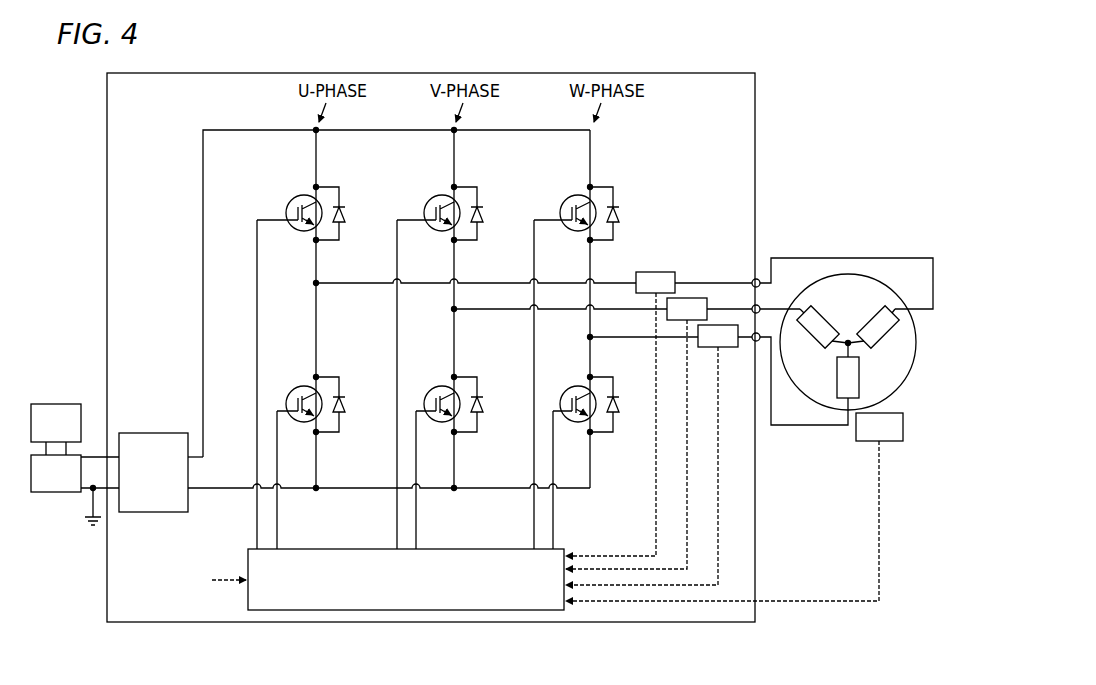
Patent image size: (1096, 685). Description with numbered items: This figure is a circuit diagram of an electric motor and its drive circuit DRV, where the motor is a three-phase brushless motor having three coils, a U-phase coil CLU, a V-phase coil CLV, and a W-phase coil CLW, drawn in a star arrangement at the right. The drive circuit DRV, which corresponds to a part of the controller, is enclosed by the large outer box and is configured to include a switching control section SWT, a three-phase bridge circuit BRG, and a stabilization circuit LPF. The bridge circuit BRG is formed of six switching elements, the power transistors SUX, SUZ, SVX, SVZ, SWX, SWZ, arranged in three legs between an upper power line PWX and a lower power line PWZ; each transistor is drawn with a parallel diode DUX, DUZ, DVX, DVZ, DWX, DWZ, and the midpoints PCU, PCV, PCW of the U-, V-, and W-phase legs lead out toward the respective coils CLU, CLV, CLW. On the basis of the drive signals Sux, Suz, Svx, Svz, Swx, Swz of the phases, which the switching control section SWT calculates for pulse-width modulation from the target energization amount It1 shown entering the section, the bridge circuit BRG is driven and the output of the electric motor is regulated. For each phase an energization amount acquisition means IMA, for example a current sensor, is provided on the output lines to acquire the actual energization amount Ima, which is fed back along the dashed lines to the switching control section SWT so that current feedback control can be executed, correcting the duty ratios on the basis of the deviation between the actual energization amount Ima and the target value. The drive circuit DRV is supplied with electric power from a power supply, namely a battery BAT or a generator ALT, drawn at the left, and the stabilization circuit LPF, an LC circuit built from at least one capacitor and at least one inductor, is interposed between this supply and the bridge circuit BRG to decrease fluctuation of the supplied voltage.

The drive circuit DRV is at (531, 73).
The positive power line PWX is at (222, 130).
The negative power line PWZ is at (196, 487).
The three-phase bridge circuit BRG is at (256, 199).
The switching element SUX is at (298, 196).
The U-phase upper diode DUX is at (345, 202).
The switching element SVX is at (436, 196).
The V-phase upper diode DVX is at (483, 202).
The switching element SWX is at (574, 189).
The W-phase upper diode DWX is at (620, 202).
The switching element SUZ is at (298, 385).
The U-phase lower diode DUZ is at (345, 392).
The switching element SVZ is at (436, 385).
The V-phase lower diode DVZ is at (483, 392).
The switching element SWZ is at (574, 378).
The W-phase lower diode DWZ is at (620, 394).
The U-phase connection point PCU is at (316, 312).
The V-phase connection point PCV is at (454, 325).
The W-phase connection point PCW is at (592, 343).
The drive signal Sux is at (242, 384).
The drive signal Suz is at (293, 480).
The drive signal Svx is at (382, 384).
The drive signal Svz is at (431, 480).
The drive signal Swx is at (516, 384).
The drive signal Swz is at (570, 480).
The switching control section SWT is at (406, 579).
The target current signal It1 is at (215, 581).
The generator ALT is at (56, 429).
The battery BAT is at (75, 490).
The stabilization circuit LPF is at (161, 472).
The energization amount acquisition means IMA is at (784, 341).
The actual energization amount Ima is at (642, 439).
The U-phase coil CLU is at (873, 327).
The V-phase coil CLV is at (822, 327).
The W-phase coil CLW is at (848, 370).